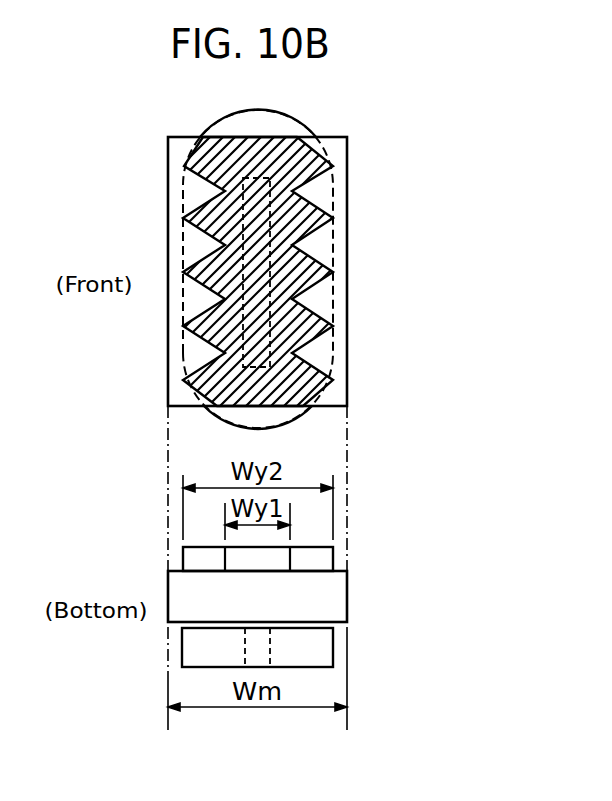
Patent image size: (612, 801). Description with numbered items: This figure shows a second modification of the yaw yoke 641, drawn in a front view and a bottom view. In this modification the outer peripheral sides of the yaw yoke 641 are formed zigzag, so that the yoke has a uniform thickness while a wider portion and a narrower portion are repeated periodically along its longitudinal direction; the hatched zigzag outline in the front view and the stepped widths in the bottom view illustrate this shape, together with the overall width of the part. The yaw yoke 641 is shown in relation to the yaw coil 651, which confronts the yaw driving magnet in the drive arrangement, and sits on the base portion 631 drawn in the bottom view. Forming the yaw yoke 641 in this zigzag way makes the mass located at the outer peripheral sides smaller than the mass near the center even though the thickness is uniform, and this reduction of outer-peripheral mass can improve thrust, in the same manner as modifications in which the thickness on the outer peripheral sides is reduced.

The main body 631 is at (175, 406).
The yaw yoke 641 is at (273, 407).
The yaw coil 651 is at (323, 660).